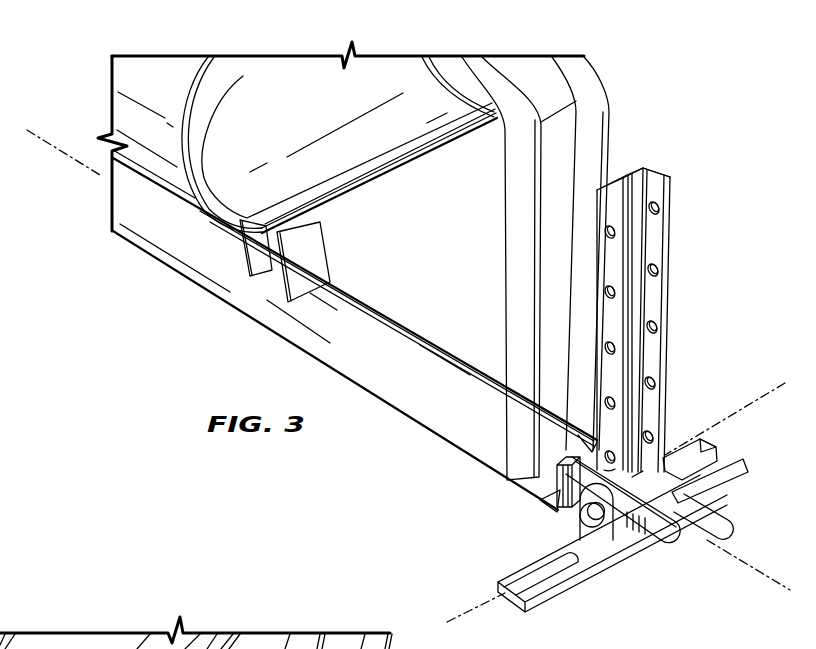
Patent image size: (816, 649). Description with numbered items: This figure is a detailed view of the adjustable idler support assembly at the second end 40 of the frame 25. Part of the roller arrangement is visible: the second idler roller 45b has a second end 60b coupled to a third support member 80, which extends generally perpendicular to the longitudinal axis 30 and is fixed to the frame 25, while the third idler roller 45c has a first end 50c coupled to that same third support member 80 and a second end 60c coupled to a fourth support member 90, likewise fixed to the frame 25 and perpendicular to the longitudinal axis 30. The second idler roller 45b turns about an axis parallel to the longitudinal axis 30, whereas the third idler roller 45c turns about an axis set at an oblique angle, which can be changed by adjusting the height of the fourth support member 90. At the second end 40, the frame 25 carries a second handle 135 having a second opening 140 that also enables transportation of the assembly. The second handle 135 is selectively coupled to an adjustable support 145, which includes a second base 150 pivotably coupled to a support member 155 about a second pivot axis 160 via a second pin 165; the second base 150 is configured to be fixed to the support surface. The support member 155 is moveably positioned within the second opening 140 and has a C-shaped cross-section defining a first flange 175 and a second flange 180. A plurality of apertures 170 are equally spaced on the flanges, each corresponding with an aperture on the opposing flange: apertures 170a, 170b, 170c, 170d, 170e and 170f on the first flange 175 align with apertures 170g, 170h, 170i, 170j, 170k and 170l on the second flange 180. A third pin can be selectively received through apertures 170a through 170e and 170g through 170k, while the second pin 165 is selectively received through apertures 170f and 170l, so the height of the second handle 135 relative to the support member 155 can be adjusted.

The frame 25 is at (137, 248).
The longitudinal axis 30 is at (742, 562).
The second end 40 is at (393, 513).
The second idler roller 45b is at (143, 78).
The third idler roller 45c is at (395, 75).
The first end 50c is at (192, 128).
The second end 60b is at (150, 177).
The second end 60c is at (442, 77).
The third support member 80 is at (240, 255).
The fourth support member 90 is at (603, 78).
The second handle 135 is at (733, 528).
The second opening 140 is at (689, 499).
The adjustable support 145 is at (772, 367).
The second base 150 is at (574, 598).
The support member 155 is at (677, 118).
The second pivot axis 160 is at (480, 593).
The second pin 165 is at (597, 534).
The plurality of apertures 170 is at (761, 205).
The first aperture 170a is at (604, 232).
The aperture 170b is at (604, 292).
The aperture 170c is at (604, 348).
The aperture 170d is at (604, 403).
The aperture 170e is at (600, 456).
The sixth aperture 170f is at (598, 468).
The seventh aperture 170g is at (659, 208).
The aperture 170h is at (658, 270).
The aperture 170i is at (657, 327).
The aperture 170j is at (655, 383).
The aperture 170k is at (653, 437).
The twelfth aperture 170l is at (707, 443).
The first flange 175 is at (638, 167).
The second flange 180 is at (664, 173).